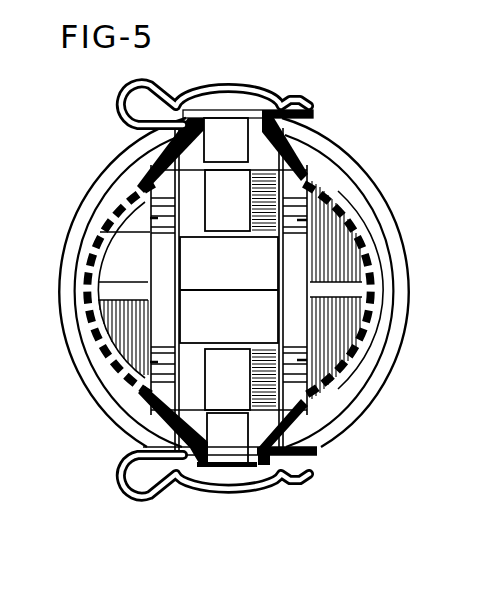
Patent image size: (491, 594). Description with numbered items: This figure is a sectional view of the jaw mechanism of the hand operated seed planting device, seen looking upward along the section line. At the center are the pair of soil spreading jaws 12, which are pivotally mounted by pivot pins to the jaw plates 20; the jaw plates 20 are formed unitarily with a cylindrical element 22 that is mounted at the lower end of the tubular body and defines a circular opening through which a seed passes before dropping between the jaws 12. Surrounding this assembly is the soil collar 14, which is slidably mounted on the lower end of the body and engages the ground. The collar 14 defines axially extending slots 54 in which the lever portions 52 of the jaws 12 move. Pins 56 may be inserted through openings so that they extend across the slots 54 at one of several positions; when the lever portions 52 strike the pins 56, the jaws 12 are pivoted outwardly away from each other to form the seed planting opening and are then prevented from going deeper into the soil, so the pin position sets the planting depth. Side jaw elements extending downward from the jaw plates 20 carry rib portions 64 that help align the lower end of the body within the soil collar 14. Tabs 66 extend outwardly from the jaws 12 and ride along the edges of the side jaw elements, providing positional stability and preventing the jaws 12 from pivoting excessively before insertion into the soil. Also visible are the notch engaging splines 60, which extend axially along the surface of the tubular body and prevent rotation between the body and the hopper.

The soil spreading jaws 12 is at (186, 267).
The soil collar 14 is at (363, 242).
The jaw plates 20 is at (163, 183).
The cylindrical element 22 is at (150, 198).
The lever portion 52 is at (232, 142).
The axially extending slots 54 is at (243, 105).
The pins 56 is at (117, 107).
The notch engaging splines 60 is at (155, 303).
The rib portions 64 is at (102, 289).
The tabs 66 is at (152, 219).